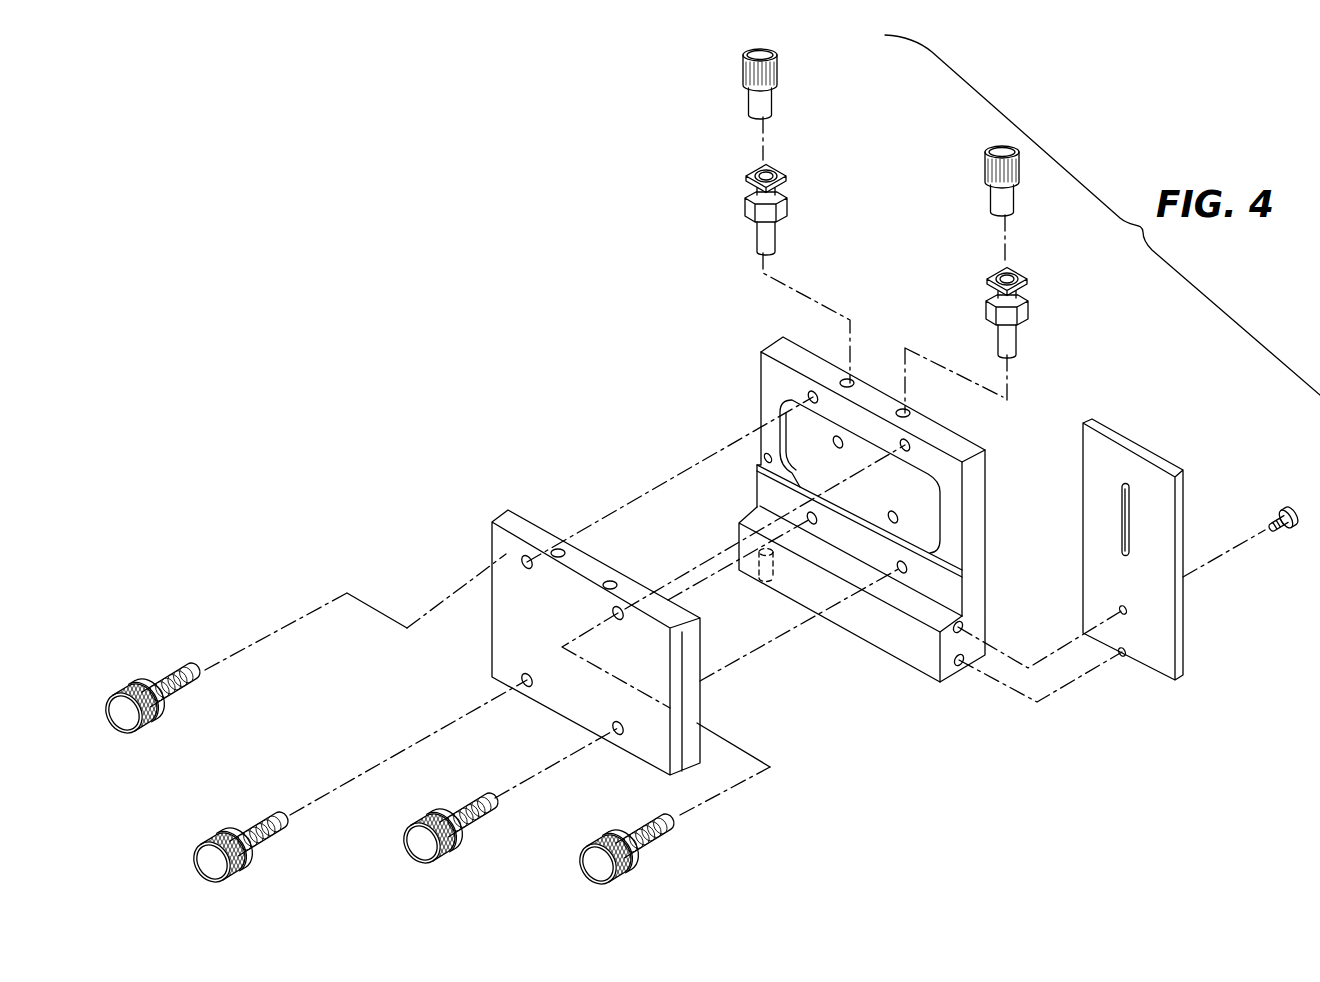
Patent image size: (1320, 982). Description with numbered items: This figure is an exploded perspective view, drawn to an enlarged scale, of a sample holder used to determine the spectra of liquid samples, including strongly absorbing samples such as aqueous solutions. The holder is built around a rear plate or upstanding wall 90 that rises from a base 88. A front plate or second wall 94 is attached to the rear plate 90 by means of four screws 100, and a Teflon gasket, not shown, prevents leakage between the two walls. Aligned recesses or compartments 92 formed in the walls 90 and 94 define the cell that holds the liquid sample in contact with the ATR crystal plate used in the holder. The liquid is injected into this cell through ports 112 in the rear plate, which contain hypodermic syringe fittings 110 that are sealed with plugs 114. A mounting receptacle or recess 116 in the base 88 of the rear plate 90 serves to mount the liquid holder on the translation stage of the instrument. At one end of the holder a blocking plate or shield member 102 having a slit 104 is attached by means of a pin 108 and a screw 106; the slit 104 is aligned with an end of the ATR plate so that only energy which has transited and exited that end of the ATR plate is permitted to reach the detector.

The base 88 is at (880, 520).
The rear plate 90 is at (988, 447).
The recesses 92 is at (925, 506).
The front plate 94 is at (520, 564).
The screws 100 is at (640, 862).
The blocking plate 102 is at (1148, 573).
The slit 104 is at (1125, 480).
The screw 106 is at (1276, 505).
The pin 108 is at (1122, 658).
The hypodermic syringe fittings 110 is at (747, 180).
The ports 112 is at (905, 412).
The plugs 114 is at (743, 73).
The mounting recess 116 is at (766, 582).